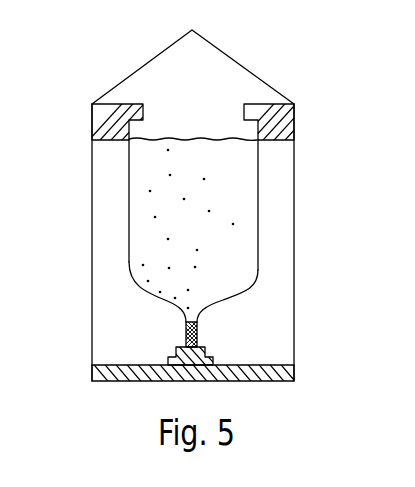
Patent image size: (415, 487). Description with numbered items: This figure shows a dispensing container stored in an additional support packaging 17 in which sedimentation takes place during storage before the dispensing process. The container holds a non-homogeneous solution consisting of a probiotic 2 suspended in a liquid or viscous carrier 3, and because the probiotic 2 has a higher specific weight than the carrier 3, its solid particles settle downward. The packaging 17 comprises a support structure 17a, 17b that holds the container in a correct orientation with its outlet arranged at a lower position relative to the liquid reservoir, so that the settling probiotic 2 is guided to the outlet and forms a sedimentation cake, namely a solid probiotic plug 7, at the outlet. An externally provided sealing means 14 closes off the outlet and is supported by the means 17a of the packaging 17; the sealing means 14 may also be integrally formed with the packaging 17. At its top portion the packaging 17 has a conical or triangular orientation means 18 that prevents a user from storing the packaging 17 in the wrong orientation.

The probiotic 2 is at (241, 175).
The liquid or viscous carrier 3 is at (242, 257).
The solid probiotic plug 7 is at (183, 338).
The sealing means 14 is at (202, 355).
The packaging 17 is at (92, 218).
The means for supporting the sealing means 17a is at (292, 375).
The support structure 17b is at (100, 118).
The orientation means 18 is at (237, 73).